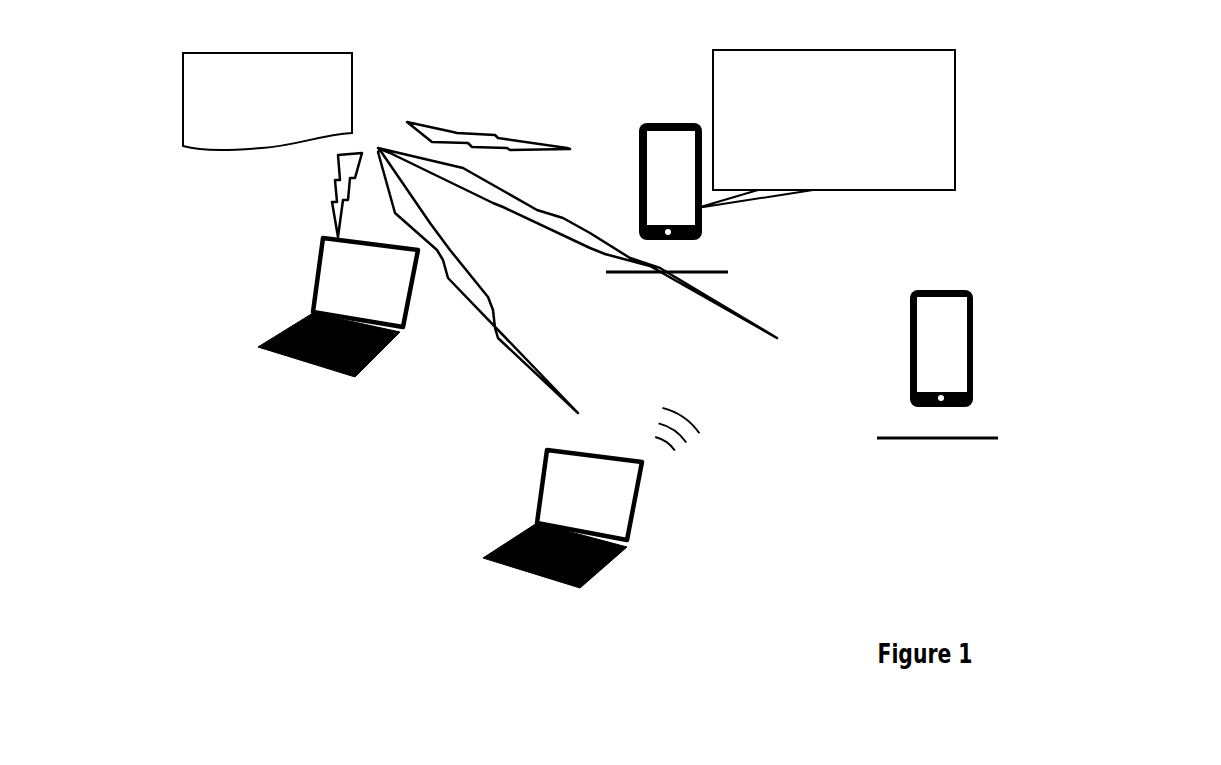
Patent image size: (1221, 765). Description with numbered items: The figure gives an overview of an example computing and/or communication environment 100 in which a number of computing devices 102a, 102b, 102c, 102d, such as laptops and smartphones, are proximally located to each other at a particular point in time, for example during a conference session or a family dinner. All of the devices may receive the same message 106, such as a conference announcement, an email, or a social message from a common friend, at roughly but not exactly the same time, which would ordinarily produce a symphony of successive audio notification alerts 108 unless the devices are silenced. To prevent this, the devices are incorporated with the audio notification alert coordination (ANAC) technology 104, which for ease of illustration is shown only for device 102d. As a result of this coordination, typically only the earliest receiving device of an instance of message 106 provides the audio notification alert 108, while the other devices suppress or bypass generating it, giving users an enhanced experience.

The computing and/or communication environment 100 is at (1153, 224).
The computing device 102a is at (280, 357).
The computing device 102b is at (502, 578).
The computing device 102c is at (1008, 378).
The computing device 102d is at (625, 170).
The audio notification alert coordination (ANAC) technology 104 is at (818, 172).
The message 106 is at (250, 118).
The audio notification alert 108 is at (708, 440).